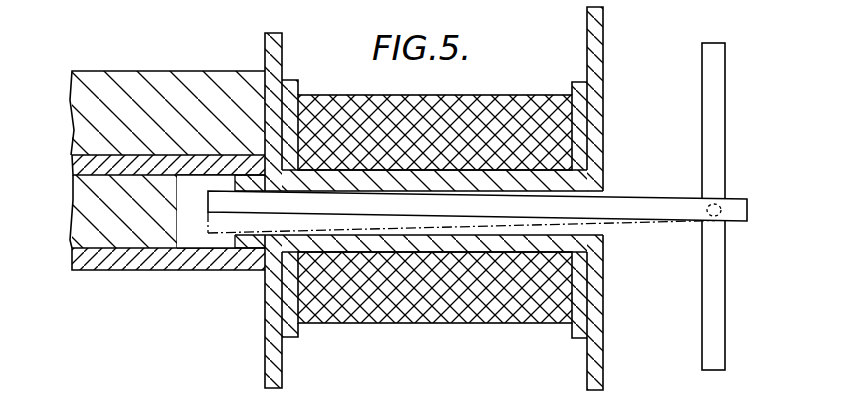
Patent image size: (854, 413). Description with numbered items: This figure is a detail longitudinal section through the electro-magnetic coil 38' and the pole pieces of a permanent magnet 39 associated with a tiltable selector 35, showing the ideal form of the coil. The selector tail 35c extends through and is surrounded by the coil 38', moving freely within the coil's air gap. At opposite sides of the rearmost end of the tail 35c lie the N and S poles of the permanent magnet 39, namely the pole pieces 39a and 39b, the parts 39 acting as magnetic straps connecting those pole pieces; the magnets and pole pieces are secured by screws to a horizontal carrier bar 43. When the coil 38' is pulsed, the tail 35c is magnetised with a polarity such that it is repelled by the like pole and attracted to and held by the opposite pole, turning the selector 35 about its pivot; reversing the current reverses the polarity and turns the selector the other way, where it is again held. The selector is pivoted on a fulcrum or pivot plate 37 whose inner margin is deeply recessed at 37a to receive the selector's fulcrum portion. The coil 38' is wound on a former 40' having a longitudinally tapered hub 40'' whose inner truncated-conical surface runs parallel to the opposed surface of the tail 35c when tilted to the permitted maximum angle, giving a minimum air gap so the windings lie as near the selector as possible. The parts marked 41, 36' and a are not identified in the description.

The horizontal carrier bar 43 is at (111, 85).
The permanent magnet 39 is at (142, 250).
The S pole S is at (114, 268).
The N pole N is at (206, 211).
The N pole piece 39a is at (246, 157).
The S pole piece 39b is at (250, 250).
The bobbin flange 41 is at (279, 42).
The longitudinally tapered hub 40'' is at (434, 131).
The former 40' is at (434, 301).
The electro-magnetic coil 38' is at (435, 196).
The fulcrum or pivot plate 37 is at (712, 56).
The recess 37a is at (708, 193).
The shaft alternate position 36' is at (461, 228).
The selector 35 is at (637, 216).
The selector tail 35c is at (327, 197).
The pivot point a is at (718, 201).